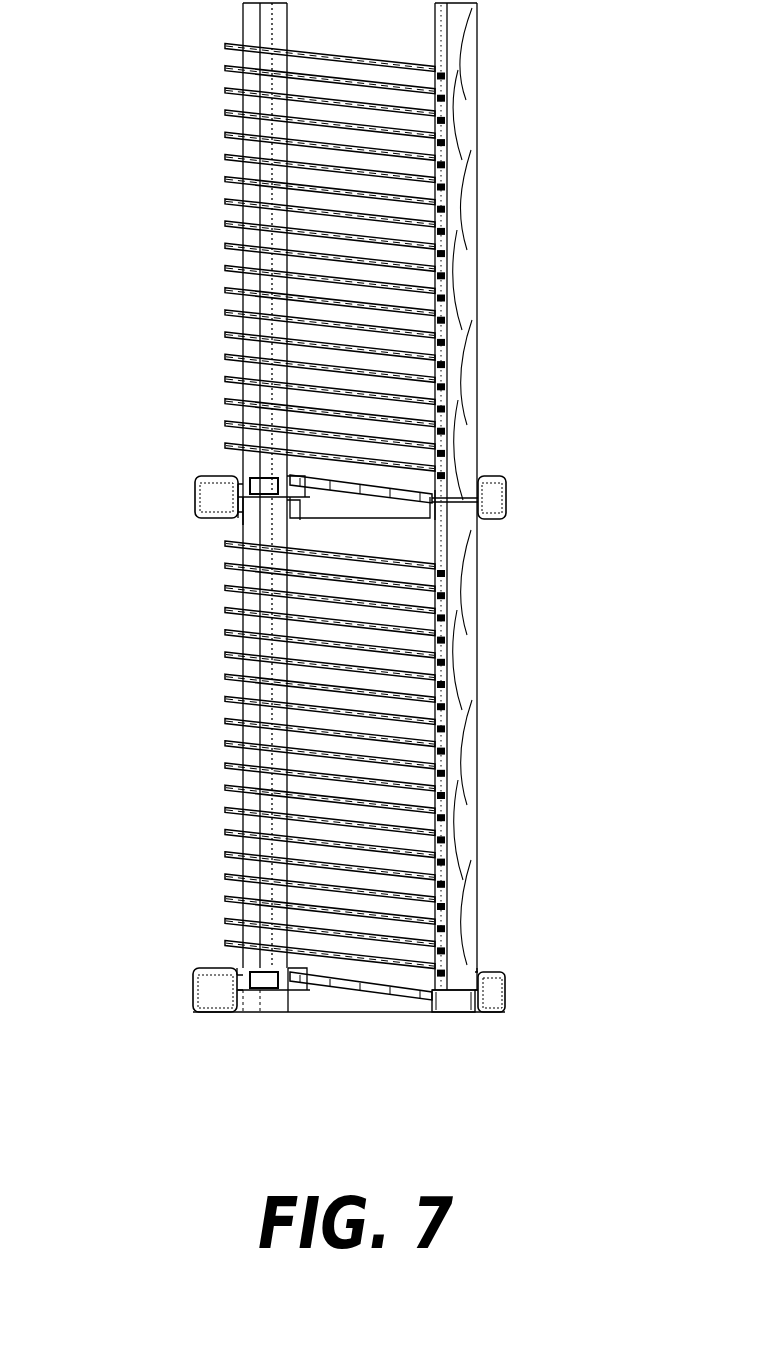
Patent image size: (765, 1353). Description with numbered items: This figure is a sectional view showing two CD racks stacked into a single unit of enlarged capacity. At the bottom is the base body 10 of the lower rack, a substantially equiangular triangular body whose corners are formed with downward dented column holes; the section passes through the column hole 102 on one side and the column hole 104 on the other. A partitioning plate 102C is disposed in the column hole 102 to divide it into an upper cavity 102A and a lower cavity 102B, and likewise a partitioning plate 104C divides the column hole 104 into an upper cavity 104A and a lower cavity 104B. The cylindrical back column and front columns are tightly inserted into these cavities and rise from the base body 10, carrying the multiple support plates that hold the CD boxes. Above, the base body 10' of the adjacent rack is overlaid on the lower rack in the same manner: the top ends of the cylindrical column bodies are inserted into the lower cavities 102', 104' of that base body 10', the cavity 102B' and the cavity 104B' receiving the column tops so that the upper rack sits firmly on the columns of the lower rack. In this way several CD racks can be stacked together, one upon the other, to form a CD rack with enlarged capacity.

The base body 10 is at (341, 991).
The base body of an adjacent CD rack 10' is at (364, 539).
The column hole 102 is at (541, 1027).
The lower cavity of the adjacent base body 102' is at (560, 516).
The upper cavity 102A is at (475, 973).
The lower cavity 102B is at (442, 1036).
The lower cavity of the adjacent base body 102B' is at (503, 550).
The partitioning plate 102C is at (472, 1012).
The column hole 104 is at (146, 988).
The lower cavity of the adjacent base body 104' is at (166, 495).
The upper cavity 104A is at (237, 965).
The lower cavity 104B is at (198, 1044).
The lower cavity of the adjacent base body 104B' is at (164, 533).
The partitioning plate 104C is at (267, 1000).